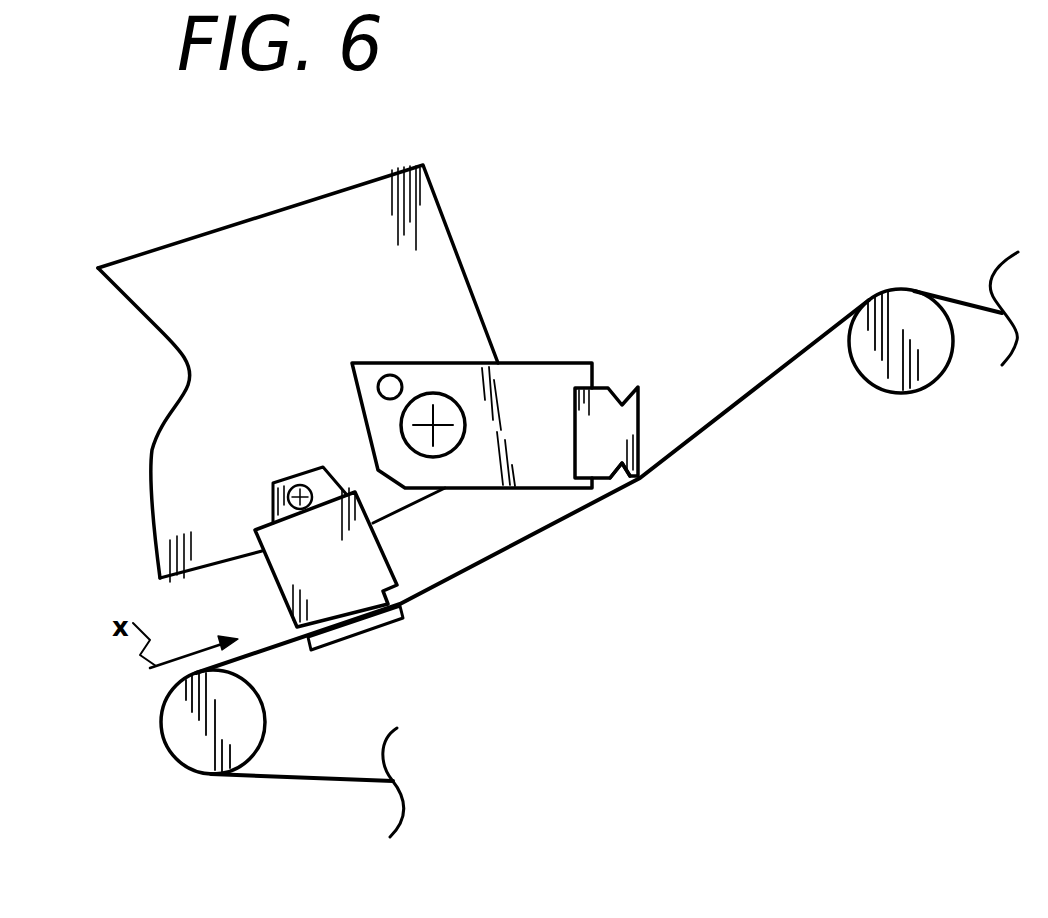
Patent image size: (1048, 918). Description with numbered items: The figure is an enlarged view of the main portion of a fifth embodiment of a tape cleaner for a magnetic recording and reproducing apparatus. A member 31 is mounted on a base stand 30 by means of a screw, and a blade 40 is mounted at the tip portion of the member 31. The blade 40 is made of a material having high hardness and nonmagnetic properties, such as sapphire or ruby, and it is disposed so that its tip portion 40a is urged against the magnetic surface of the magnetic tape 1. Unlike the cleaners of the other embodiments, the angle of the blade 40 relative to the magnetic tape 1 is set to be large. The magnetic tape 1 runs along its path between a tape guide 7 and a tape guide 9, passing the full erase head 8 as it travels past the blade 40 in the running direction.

The base stand 30 is at (132, 302).
The member 31 is at (355, 393).
The blade 40 is at (598, 388).
The tip portion 40a is at (646, 480).
The full erase head 8 is at (282, 600).
The tape guide 7 is at (183, 757).
The tape guide 9 is at (908, 393).
The magnetic tape 1 is at (270, 777).